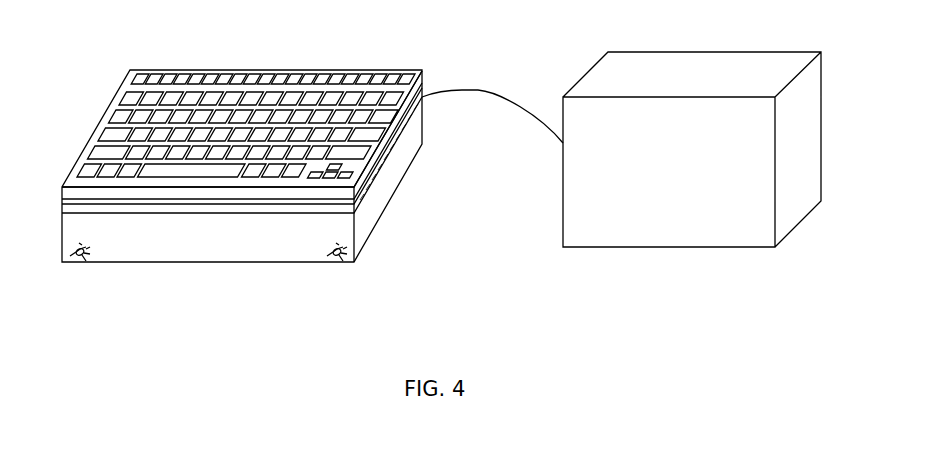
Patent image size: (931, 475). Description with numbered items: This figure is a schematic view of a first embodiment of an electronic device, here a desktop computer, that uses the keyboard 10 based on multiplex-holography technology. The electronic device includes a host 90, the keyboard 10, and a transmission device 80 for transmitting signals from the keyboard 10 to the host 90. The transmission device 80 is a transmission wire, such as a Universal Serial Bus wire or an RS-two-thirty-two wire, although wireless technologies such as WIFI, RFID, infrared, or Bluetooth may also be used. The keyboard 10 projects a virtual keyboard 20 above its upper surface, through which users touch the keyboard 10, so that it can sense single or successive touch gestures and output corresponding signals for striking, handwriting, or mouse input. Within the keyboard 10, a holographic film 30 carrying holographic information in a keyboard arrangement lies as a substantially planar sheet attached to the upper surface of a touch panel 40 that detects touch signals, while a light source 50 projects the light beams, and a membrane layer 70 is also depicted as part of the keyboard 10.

The keyboard 10 is at (412, 72).
The virtual keyboard 20 is at (265, 72).
The holographic film 30 is at (345, 191).
The touch panel 40 is at (347, 212).
The light source 50 is at (345, 248).
The membrane layer 70 is at (356, 202).
The transmission device 80 is at (478, 82).
The host 90 is at (712, 63).